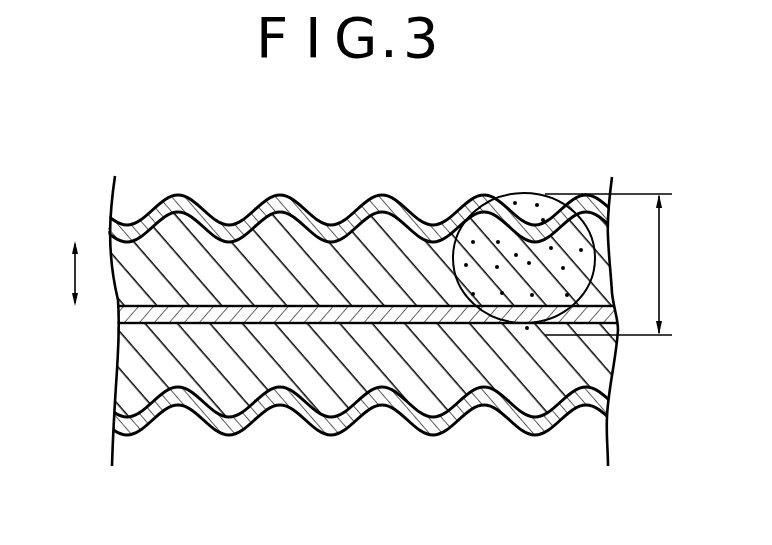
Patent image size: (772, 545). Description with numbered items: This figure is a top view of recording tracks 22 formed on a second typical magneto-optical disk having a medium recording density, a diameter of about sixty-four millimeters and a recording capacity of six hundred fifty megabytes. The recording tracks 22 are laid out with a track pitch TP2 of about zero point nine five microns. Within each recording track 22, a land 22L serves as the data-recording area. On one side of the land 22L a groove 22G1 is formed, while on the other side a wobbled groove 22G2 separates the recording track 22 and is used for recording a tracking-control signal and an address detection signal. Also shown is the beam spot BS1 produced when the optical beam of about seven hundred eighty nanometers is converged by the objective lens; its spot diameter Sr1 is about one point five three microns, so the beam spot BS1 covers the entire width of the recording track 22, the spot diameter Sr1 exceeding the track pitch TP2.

The recording track 22 is at (412, 245).
The land 22L is at (232, 260).
The wobbled groove 22G2 is at (350, 245).
The groove 22G1 is at (118, 317).
The beam spot BS1 is at (522, 193).
The track pitch TP2 is at (53, 273).
The spot diameter Sr1 is at (612, 264).